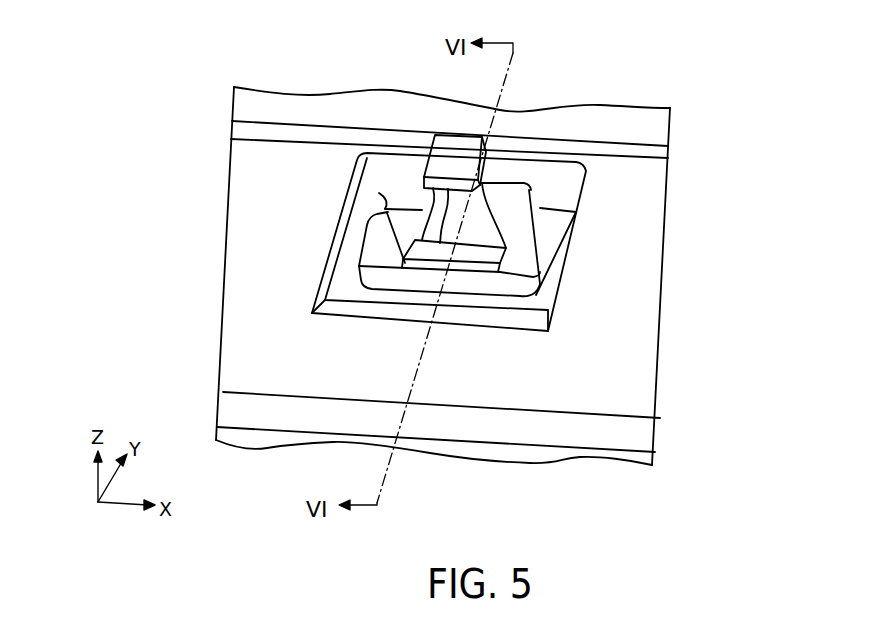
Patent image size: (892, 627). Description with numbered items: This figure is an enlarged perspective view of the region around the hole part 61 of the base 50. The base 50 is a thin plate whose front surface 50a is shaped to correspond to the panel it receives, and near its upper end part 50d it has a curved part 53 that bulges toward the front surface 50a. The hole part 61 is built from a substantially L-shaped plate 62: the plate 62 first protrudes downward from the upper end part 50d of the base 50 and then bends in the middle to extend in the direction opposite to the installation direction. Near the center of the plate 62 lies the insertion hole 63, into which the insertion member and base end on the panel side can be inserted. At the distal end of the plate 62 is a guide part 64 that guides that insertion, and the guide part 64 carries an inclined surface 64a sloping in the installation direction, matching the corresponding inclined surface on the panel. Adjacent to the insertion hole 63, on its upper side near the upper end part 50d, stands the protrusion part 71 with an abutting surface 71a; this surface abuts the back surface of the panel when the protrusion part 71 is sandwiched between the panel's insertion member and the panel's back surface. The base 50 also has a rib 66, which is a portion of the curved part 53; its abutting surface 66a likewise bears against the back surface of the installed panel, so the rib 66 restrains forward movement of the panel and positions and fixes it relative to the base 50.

The base 50 is at (317, 123).
The front surface 50a is at (235, 290).
The upper end part 50d is at (637, 123).
The curved part 53 is at (655, 307).
The hole part 61 is at (366, 246).
The plate 62 is at (541, 242).
The insertion hole 63 is at (500, 198).
The guide part 64 is at (505, 266).
The inclined surface 64a is at (460, 272).
The rib 66 is at (488, 387).
The abutting surface 66a is at (430, 387).
The protrusion part 71 is at (451, 138).
The abutting surface 71a is at (445, 160).